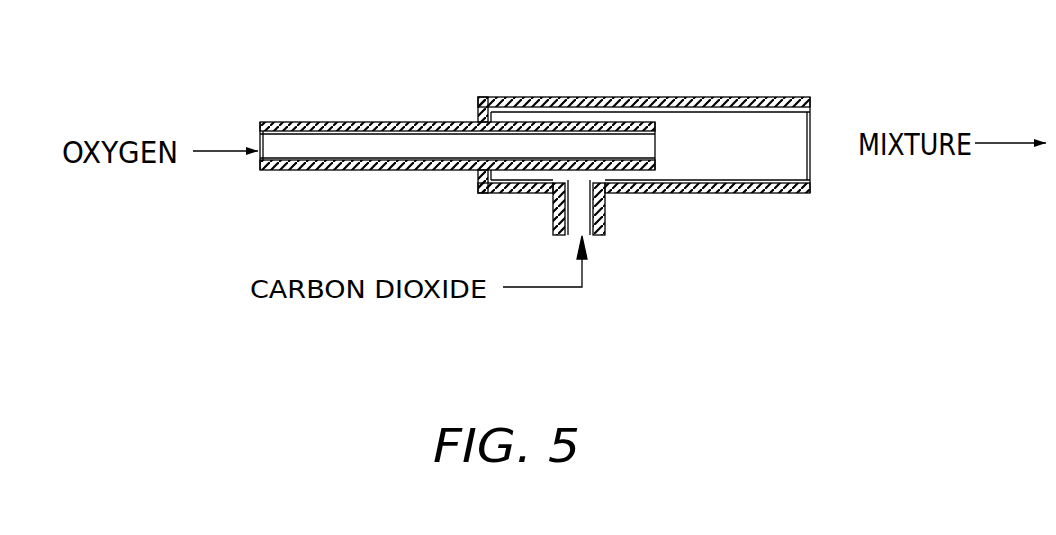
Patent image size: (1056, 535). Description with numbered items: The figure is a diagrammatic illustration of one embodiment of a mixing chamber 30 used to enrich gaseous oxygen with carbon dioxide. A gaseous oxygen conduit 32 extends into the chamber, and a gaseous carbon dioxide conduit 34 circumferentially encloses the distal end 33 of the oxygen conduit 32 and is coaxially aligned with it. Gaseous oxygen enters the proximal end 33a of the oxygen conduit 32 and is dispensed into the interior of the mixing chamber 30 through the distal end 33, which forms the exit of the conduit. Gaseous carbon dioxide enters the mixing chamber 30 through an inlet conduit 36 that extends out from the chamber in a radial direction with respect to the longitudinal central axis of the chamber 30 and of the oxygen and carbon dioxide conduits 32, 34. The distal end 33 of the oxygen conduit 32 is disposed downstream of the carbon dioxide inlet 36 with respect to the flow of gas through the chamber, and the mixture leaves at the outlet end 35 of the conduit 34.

The mixing chamber 30 is at (636, 96).
The gaseous oxygen conduit 32 is at (358, 120).
The distal end 33 is at (658, 137).
The proximal end 33a is at (258, 127).
The gaseous carbon dioxide conduit 34 is at (722, 194).
The mixture outlet end 35 is at (810, 168).
The inlet conduit 36 is at (606, 220).